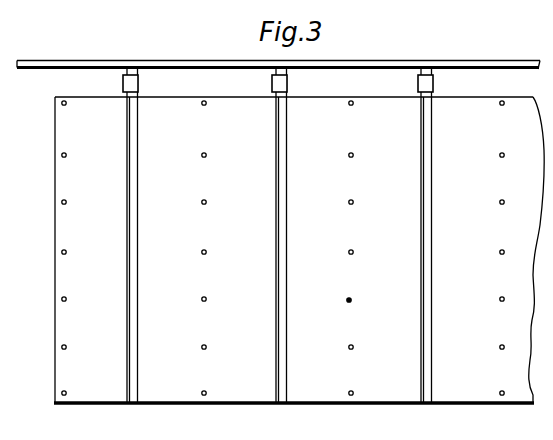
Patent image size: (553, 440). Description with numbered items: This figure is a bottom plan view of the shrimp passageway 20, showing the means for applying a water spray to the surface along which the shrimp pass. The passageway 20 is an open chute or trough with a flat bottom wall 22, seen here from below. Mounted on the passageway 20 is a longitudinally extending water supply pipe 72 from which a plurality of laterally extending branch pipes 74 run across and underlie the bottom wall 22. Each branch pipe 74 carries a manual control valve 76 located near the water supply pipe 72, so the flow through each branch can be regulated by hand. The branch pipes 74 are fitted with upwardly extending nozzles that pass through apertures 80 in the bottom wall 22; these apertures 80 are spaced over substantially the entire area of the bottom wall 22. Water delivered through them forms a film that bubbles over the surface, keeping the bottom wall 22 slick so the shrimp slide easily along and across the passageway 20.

The passageway 20 is at (82, 406).
The bottom wall 22 is at (172, 380).
The water supply pipe 72 is at (172, 60).
The branch pipes 74 is at (138, 235).
The manual control valve 76 is at (138, 84).
The apertures 80 is at (206, 301).